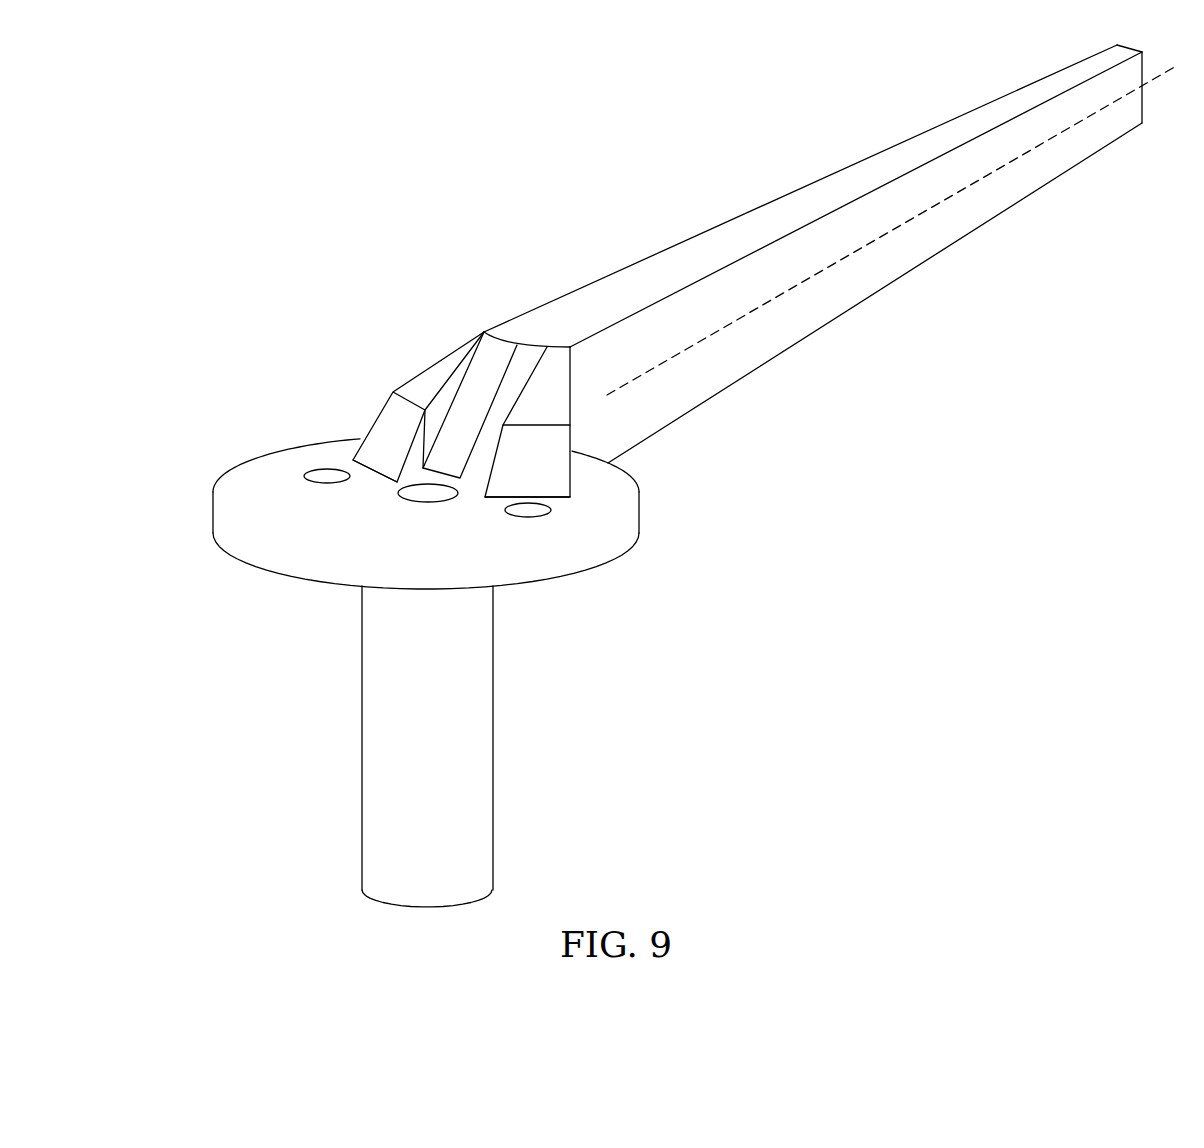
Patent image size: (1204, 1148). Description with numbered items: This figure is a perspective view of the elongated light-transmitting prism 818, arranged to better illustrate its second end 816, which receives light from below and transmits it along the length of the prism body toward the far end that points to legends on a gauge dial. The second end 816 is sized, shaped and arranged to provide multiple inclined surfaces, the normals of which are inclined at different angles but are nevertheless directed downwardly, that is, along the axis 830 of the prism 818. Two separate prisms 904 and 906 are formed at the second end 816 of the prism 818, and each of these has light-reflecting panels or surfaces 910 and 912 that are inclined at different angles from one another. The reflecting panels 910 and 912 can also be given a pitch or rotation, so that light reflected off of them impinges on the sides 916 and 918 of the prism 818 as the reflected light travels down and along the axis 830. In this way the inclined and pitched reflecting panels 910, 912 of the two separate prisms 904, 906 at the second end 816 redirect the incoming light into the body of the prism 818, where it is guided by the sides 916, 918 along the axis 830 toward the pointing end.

The second end 816 is at (225, 291).
The light-transmitting prism 818 is at (839, 161).
The side of the prism 918 is at (940, 117).
The side of the prism 916 is at (992, 220).
The axis of the prism 830 is at (822, 272).
The separate prism 904 is at (393, 392).
The light-reflecting panel 912 is at (442, 367).
The light-reflecting panel 910 is at (373, 430).
The separate prism 906 is at (545, 472).